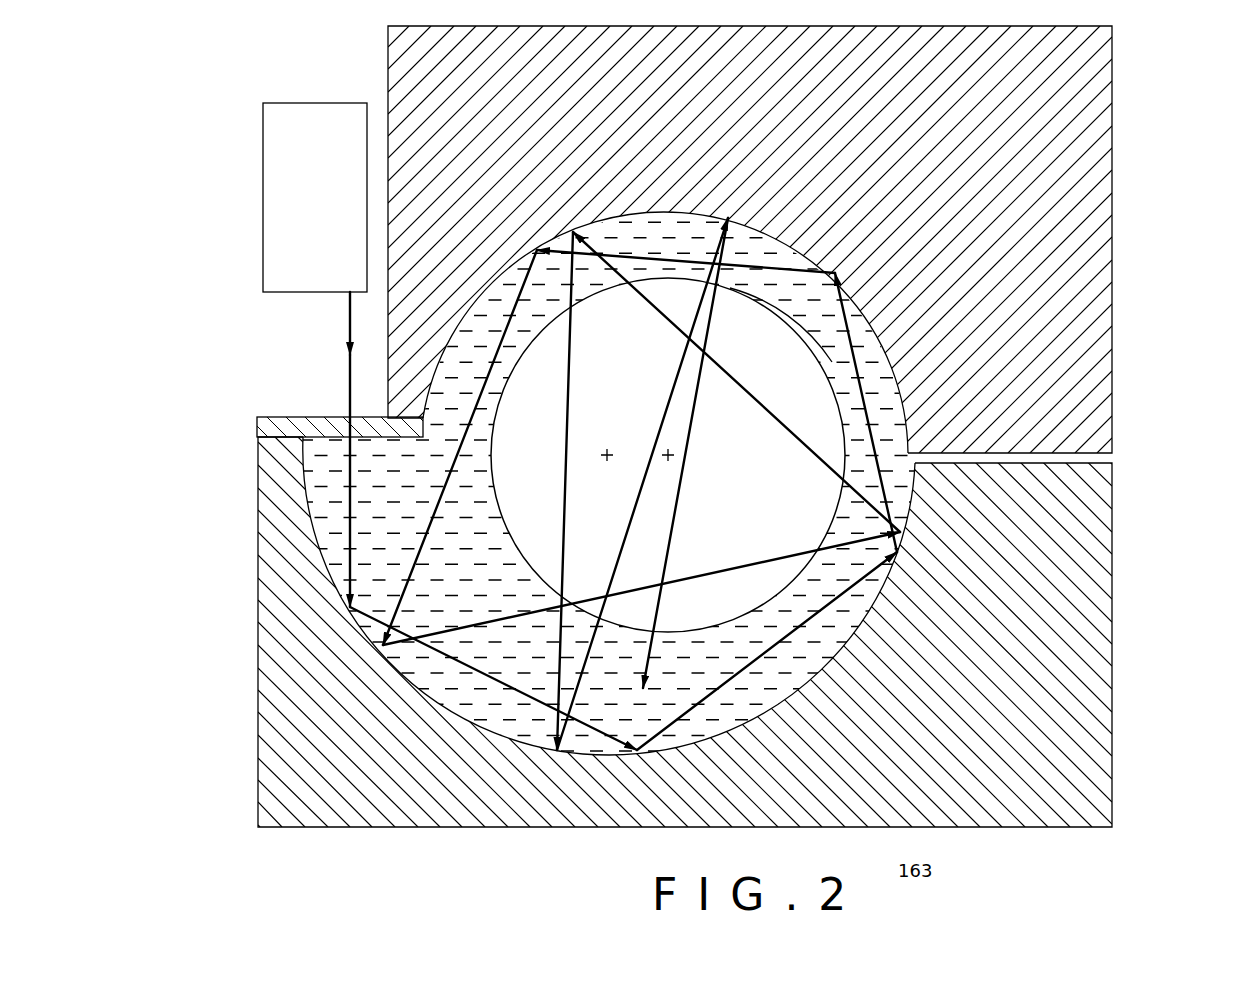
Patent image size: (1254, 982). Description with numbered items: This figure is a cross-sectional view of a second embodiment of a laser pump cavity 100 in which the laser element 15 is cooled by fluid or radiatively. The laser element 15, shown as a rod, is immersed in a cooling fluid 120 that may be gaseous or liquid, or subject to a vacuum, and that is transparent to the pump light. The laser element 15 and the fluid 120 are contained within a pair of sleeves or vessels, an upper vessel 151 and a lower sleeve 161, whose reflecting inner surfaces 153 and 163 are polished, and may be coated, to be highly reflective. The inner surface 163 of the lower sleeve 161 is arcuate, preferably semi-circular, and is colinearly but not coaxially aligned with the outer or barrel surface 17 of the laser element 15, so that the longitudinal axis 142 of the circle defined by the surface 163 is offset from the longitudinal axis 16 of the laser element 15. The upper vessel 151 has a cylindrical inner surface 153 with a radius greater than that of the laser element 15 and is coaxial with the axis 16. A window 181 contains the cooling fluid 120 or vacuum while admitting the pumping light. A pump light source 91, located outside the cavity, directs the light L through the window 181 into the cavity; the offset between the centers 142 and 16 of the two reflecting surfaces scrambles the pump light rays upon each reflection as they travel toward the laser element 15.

The laser pump cavity 100 is at (706, 426).
The upper vessel 151 is at (993, 262).
The lower sleeve 161 is at (993, 699).
The inner surface of upper vessel 153 is at (912, 400).
The inner surface of lower sleeve 163 is at (925, 616).
The window 181 is at (293, 405).
The cooling fluid 120 is at (496, 587).
The laser element 15 is at (756, 490).
The longitudinal axis of the laser element 16 is at (670, 448).
The longitudinal axis of the lower reflecting surface 142 is at (605, 448).
The barrel surface 17 is at (780, 322).
The pump light source 91 is at (328, 217).
The light L is at (349, 318).